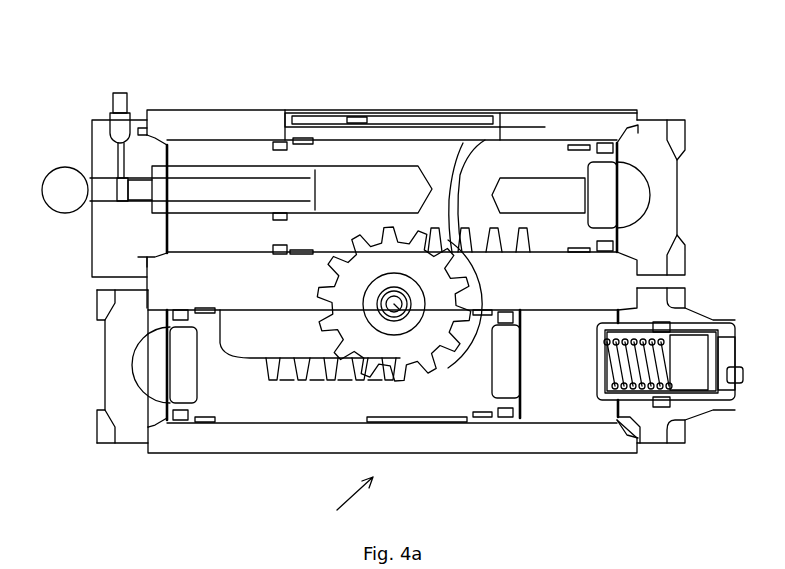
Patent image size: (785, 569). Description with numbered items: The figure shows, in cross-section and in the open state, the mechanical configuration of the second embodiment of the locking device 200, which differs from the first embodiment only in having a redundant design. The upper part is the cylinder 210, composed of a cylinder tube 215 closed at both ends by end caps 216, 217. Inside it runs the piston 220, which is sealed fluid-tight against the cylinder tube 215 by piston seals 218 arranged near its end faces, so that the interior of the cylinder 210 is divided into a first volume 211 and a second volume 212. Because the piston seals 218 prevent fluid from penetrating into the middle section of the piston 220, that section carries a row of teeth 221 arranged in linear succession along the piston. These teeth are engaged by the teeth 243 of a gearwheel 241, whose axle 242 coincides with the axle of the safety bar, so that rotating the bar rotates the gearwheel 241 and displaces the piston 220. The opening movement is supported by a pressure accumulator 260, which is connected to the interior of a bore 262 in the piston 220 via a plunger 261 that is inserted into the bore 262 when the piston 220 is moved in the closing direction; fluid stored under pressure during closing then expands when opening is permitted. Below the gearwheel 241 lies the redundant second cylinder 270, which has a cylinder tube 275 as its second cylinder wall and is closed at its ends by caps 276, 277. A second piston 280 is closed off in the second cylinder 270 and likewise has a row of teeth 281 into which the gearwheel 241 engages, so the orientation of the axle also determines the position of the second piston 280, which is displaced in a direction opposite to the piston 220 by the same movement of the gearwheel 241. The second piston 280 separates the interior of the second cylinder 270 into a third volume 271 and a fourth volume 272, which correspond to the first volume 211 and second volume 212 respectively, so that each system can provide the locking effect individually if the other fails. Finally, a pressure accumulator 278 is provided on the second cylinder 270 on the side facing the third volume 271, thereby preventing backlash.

The locking device 200 is at (343, 510).
The cylinder 210 is at (260, 117).
The first volume 211 is at (197, 150).
The second volume 212 is at (605, 187).
The cylinder tube 215 is at (525, 133).
The end cap 216 is at (95, 137).
The end cap 217 is at (670, 185).
The piston seals 218 is at (302, 143).
The piston 220 is at (463, 140).
The row of teeth 221 is at (460, 170).
The gearwheel 241 is at (355, 380).
The axle 242 is at (468, 420).
The teeth 243 is at (402, 327).
The pressure accumulator 260 is at (70, 167).
The plunger 261 is at (152, 207).
The bore 262 is at (398, 110).
The second cylinder 270 is at (568, 433).
The third volume 271 is at (640, 447).
The fourth volume 272 is at (177, 357).
The cylinder tube 275 is at (192, 437).
The cap 276 is at (112, 365).
The cap 277 is at (688, 407).
The pressure accumulator 278 is at (678, 330).
The second piston 280 is at (233, 400).
The row of teeth 281 is at (300, 365).